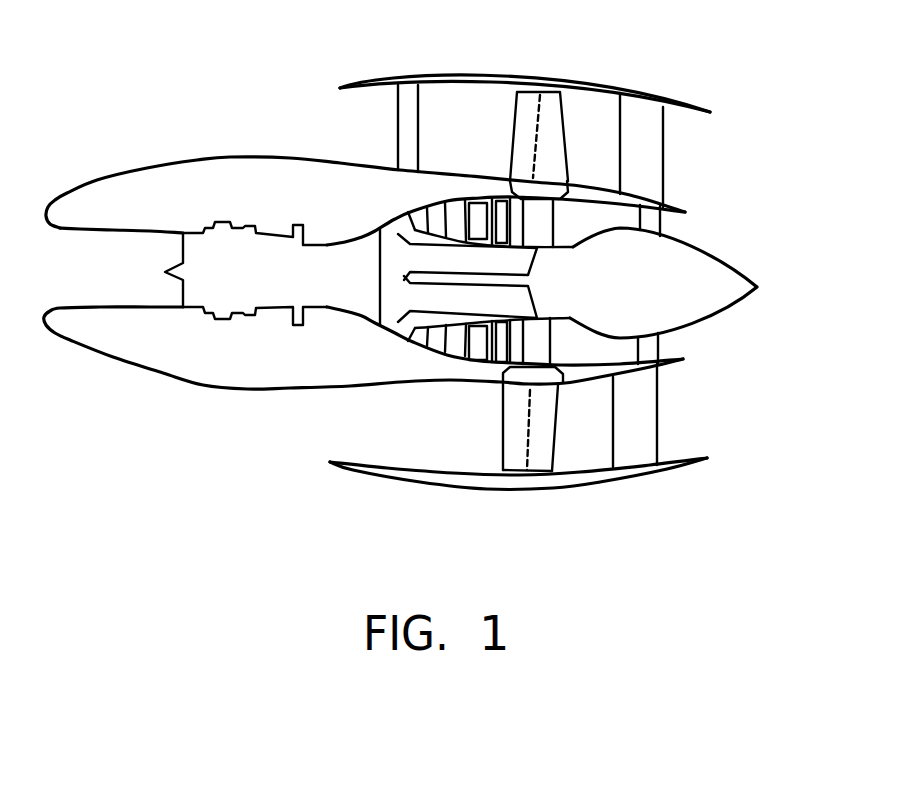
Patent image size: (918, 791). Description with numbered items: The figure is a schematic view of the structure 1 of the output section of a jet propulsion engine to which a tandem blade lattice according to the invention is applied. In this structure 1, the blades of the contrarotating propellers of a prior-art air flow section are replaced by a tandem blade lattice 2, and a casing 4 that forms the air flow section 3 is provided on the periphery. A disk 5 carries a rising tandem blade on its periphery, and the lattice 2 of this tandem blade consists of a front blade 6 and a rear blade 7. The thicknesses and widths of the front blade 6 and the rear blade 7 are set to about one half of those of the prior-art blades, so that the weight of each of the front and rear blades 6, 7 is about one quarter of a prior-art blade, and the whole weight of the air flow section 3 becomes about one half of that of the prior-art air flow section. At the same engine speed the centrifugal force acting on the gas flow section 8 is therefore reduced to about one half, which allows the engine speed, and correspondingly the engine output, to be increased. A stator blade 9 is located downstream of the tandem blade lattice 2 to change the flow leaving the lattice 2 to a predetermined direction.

The structure of output section 1 is at (432, 500).
The tandem blade lattice 2 is at (498, 457).
The air flow section 3 is at (597, 120).
The casing 4 is at (608, 85).
The disk 5 is at (520, 376).
The front blade 6 is at (515, 415).
The rear blade 7 is at (540, 457).
The gas flow section 8 is at (617, 220).
The stator blade 9 is at (663, 150).